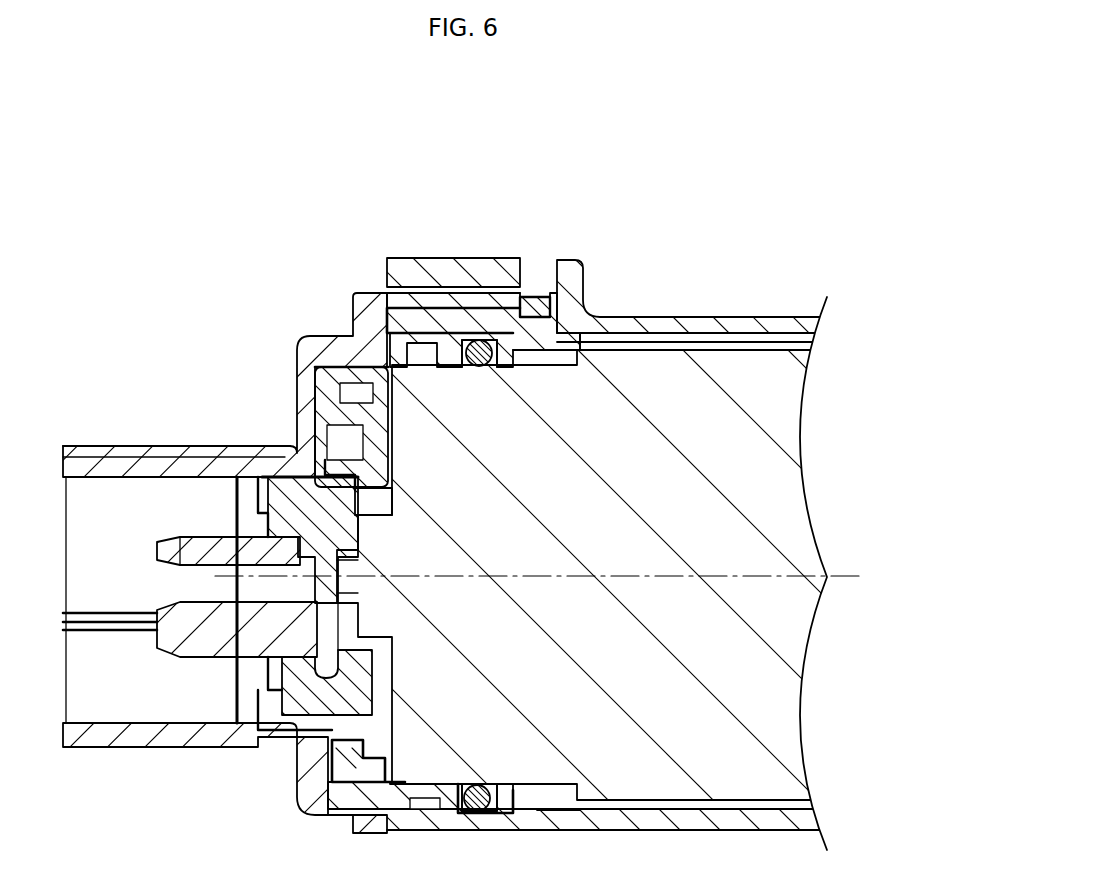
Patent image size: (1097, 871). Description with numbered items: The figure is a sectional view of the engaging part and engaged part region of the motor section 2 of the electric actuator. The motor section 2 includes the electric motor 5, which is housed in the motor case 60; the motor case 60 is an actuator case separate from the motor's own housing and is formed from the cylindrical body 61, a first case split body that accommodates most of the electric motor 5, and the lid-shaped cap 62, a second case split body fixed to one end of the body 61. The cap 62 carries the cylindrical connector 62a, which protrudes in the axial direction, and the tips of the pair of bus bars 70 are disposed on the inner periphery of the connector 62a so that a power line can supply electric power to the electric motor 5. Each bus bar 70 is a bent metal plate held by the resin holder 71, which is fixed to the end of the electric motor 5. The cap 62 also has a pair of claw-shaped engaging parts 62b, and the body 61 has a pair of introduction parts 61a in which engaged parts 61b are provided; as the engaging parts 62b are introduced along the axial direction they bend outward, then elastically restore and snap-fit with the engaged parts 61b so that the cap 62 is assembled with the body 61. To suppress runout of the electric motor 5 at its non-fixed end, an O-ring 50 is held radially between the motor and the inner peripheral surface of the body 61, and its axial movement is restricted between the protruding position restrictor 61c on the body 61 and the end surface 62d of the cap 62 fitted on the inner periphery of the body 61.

The motor section 2 is at (692, 278).
The electric motor 5 is at (757, 383).
The O-ring 50 is at (480, 363).
The motor case 60 is at (380, 157).
The body 61 is at (657, 320).
The introduction part 61a is at (420, 283).
The engaged part 61b is at (512, 306).
The position restrictor 61c is at (512, 350).
The cap 62 is at (313, 347).
The connector 62a is at (103, 470).
The engaging part 62b is at (535, 302).
The end surface 62d is at (465, 345).
The bus bar 70 is at (187, 615).
The holder 71 is at (340, 730).